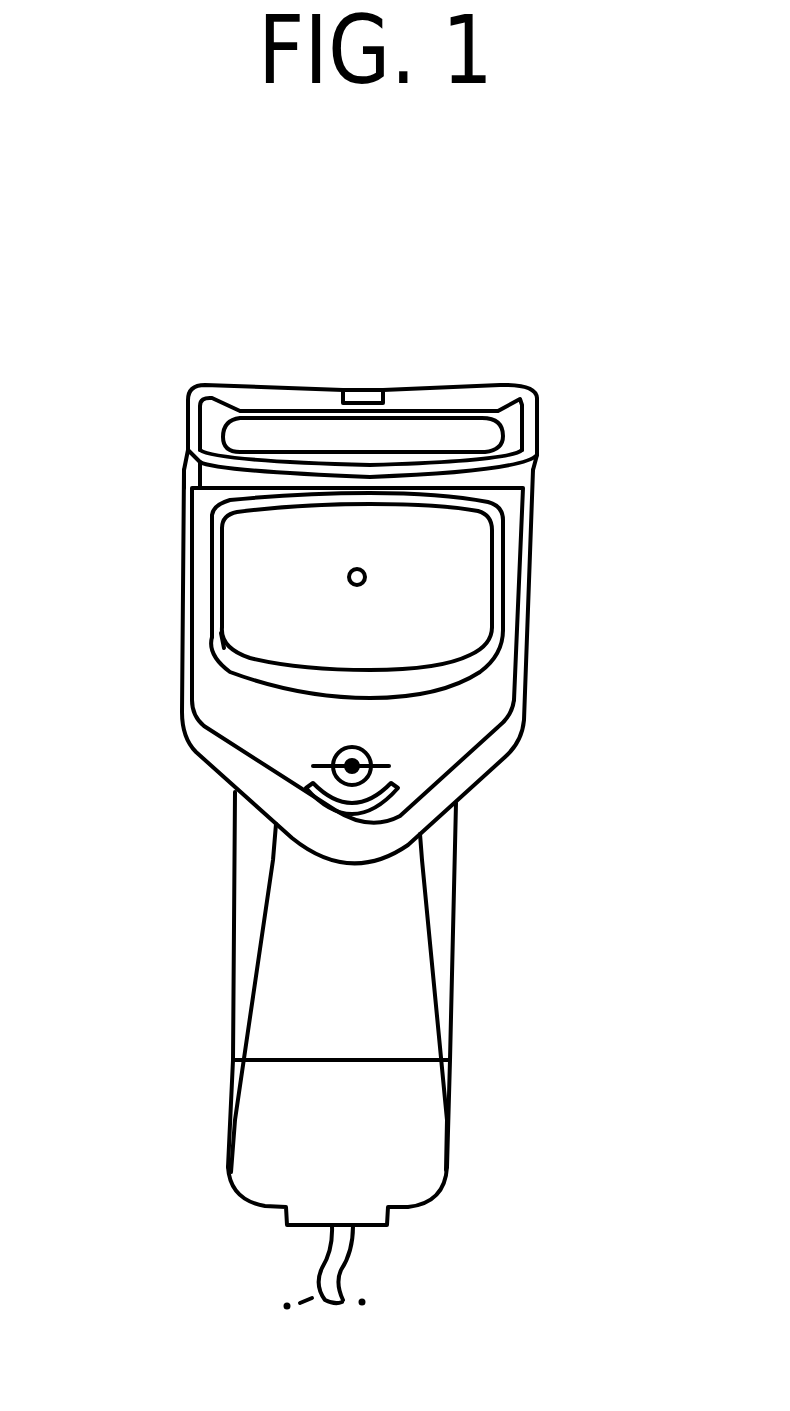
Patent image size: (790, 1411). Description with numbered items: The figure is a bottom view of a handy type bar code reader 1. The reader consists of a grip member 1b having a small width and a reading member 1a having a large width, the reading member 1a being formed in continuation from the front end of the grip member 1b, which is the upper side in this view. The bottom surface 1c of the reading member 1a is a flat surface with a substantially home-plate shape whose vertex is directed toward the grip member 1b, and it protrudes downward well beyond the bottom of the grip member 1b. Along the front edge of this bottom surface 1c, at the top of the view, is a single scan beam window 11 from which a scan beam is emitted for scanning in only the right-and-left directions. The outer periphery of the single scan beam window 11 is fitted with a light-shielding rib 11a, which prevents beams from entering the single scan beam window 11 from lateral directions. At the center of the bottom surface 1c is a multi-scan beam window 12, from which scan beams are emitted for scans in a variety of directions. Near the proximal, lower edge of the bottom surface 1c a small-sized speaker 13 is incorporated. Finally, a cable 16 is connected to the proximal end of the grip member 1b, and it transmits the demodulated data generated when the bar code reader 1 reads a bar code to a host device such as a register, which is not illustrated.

The bar code reader 1 is at (533, 647).
The reading member 1a is at (533, 540).
The grip member 1b is at (453, 975).
The bottom surface 1c is at (223, 707).
The single scan beam window 11 is at (423, 430).
The light-shielding rib 11a is at (538, 400).
The multi-scan beam window 12 is at (247, 585).
The speaker 13 is at (372, 773).
The cable 16 is at (340, 1267).